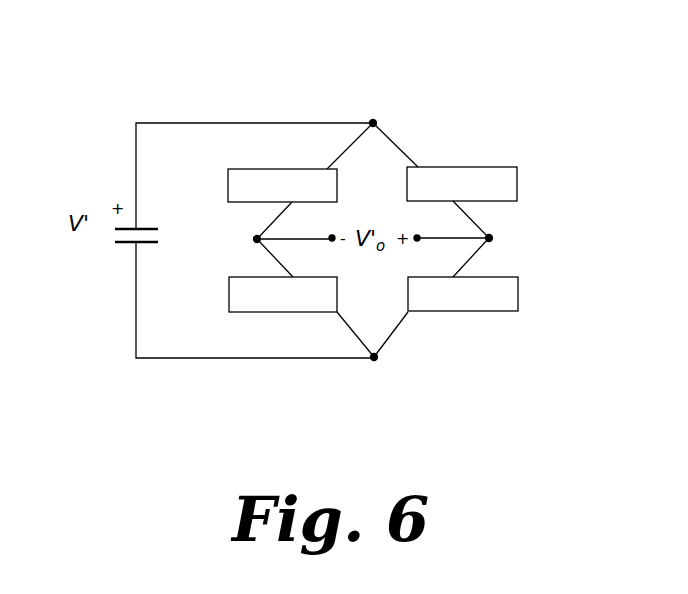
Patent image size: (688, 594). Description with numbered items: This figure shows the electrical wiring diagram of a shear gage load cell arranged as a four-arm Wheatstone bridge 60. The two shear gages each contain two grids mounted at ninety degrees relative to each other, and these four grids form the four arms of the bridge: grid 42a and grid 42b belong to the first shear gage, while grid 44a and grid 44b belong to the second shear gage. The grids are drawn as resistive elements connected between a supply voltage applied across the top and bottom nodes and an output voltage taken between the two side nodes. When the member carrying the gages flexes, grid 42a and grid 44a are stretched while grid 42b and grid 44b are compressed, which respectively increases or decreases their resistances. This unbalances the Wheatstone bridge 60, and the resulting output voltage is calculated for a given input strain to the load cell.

The Wheatstone bridge 60 is at (447, 120).
The grid 42a is at (266, 169).
The grid 42b is at (478, 167).
The grid 44a is at (490, 311).
The grid 44b is at (255, 312).